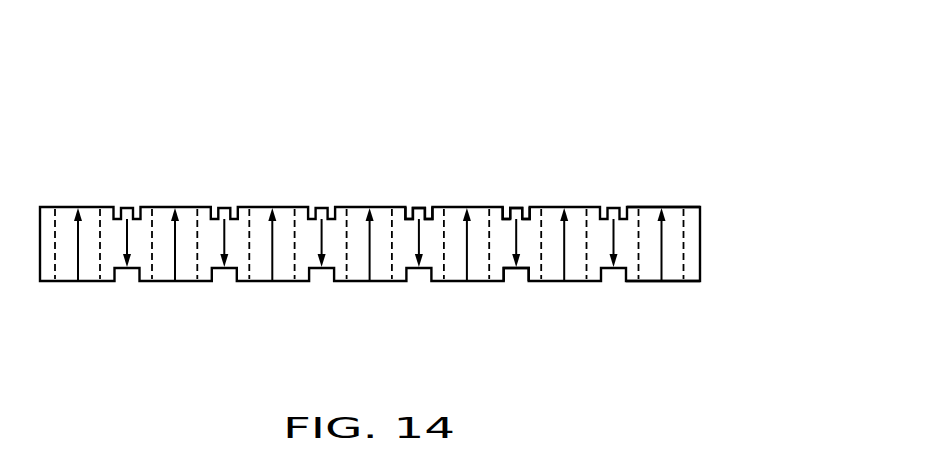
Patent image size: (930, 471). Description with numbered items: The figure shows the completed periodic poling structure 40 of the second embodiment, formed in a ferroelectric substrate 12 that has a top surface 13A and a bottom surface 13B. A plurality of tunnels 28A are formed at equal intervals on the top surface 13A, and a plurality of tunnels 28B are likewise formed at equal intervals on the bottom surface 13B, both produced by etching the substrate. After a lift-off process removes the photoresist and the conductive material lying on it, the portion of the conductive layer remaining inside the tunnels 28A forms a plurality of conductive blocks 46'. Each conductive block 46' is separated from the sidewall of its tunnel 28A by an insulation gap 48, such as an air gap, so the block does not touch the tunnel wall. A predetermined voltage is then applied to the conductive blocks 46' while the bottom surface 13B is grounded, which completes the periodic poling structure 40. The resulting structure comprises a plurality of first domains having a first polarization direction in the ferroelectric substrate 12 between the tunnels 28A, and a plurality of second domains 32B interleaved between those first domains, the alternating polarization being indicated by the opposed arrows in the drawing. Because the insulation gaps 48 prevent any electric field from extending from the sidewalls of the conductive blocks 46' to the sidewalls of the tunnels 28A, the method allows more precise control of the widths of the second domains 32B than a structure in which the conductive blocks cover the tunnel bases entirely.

The periodic poling structure 40 is at (405, 193).
The ferroelectric substrate 12 is at (697, 245).
The top surface 13A is at (650, 208).
The bottom surface 13B is at (650, 282).
The tunnels 28A is at (412, 208).
The tunnels 28B is at (513, 279).
The second domains 32B is at (310, 233).
The conductive blocks 46' is at (538, 176).
The insulation gaps 48 is at (508, 208).